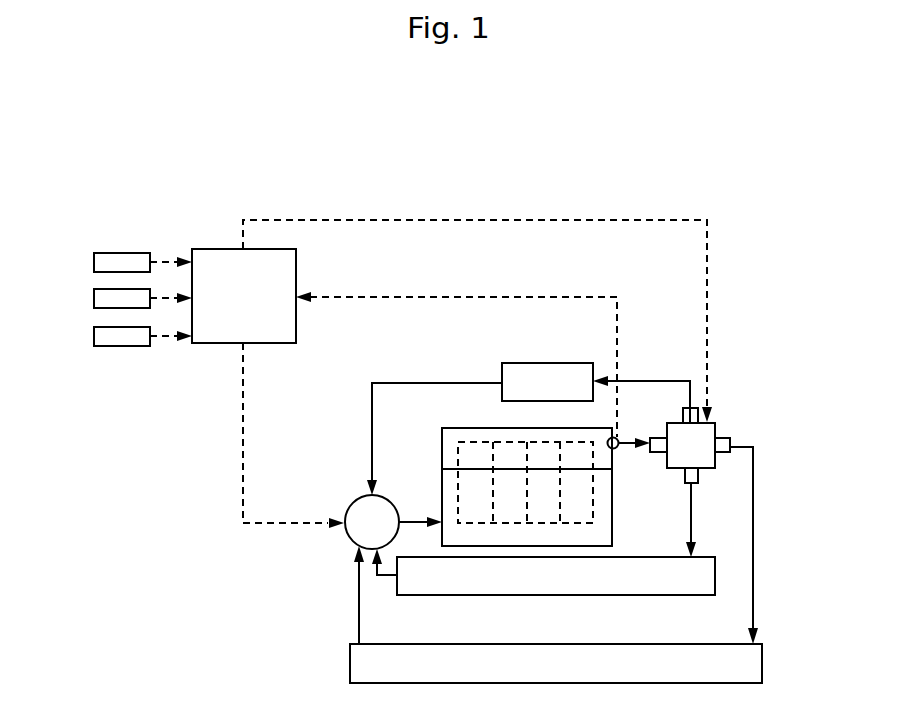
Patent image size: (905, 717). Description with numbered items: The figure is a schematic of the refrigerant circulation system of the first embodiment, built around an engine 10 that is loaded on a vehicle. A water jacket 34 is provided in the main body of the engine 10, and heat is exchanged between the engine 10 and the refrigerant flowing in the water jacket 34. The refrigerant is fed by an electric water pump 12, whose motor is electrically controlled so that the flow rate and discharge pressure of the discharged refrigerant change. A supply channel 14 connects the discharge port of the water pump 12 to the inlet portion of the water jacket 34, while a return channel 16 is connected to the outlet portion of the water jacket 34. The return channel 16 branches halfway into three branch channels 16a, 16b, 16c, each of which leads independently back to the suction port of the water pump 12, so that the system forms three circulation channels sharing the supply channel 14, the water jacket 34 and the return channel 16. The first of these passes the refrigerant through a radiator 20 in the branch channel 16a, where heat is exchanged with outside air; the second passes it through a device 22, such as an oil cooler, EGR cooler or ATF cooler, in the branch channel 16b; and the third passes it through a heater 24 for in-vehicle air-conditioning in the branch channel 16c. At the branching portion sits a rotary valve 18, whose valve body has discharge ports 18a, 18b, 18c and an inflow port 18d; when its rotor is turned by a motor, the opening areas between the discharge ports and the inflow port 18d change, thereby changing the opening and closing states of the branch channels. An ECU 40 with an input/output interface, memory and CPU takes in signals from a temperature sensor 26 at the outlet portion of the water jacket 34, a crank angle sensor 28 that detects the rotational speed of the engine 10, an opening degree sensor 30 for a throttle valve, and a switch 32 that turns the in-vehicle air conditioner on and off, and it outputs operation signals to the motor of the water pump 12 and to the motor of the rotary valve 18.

The engine 10 is at (434, 451).
The electric water pump 12 is at (356, 500).
The supply channel 14 is at (413, 520).
The return channel 16 is at (623, 440).
The branch channel 16a is at (753, 478).
The branch channel 16b is at (691, 526).
The branch channel 16c is at (417, 383).
The rotary valve 18 is at (728, 411).
The discharge port 18a is at (730, 438).
The discharge port 18b is at (685, 484).
The discharge port 18c is at (695, 408).
The inflow port 18d is at (658, 438).
The radiator 20 is at (350, 662).
The device 22 is at (680, 595).
The heater 24 is at (523, 363).
The temperature sensor 26 is at (615, 450).
The crank angle sensor 28 is at (94, 263).
The opening degree sensor 30 is at (94, 299).
The switch 32 is at (94, 337).
The water jacket 34 is at (482, 442).
The ECU 40 is at (220, 249).